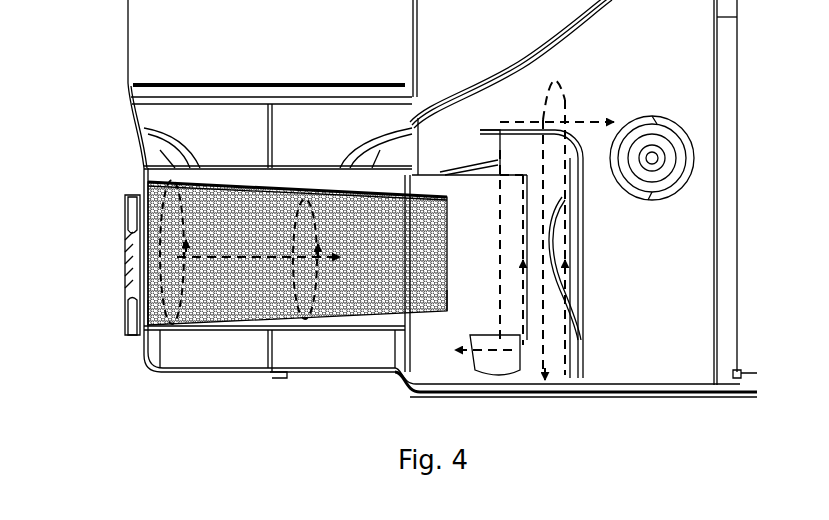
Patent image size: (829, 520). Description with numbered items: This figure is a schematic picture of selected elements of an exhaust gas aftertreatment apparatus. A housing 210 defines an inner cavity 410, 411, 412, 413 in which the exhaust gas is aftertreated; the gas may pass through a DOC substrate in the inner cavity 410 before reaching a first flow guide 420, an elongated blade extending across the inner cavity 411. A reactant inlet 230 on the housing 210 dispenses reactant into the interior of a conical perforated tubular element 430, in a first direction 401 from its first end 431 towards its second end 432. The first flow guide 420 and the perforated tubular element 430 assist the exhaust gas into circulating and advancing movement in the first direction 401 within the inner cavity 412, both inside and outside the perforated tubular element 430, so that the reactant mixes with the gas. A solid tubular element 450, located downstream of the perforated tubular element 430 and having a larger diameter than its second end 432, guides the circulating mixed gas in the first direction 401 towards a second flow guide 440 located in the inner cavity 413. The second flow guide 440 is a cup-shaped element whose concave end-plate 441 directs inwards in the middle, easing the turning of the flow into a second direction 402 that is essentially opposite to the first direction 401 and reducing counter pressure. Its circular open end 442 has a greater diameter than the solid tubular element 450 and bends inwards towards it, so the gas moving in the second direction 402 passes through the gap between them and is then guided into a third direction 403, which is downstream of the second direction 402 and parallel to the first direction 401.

The housing 210 is at (196, 372).
The reactant inlet 230 is at (138, 250).
The first direction 401 is at (297, 252).
The second direction 402 is at (484, 346).
The third direction 403 is at (553, 230).
The inner cavity 410 is at (272, 84).
The inner cavity 411 is at (340, 136).
The inner cavity 412 is at (205, 349).
The inner cavity 413 is at (652, 126).
The first flow guide 420 is at (264, 172).
The perforated tubular element 430 is at (280, 303).
The first end 431 is at (148, 318).
The second end 432 is at (442, 312).
The second flow guide 440 is at (570, 352).
The end-plate 441 is at (583, 247).
The circular open end 442 is at (490, 160).
The solid tubular element 450 is at (462, 182).